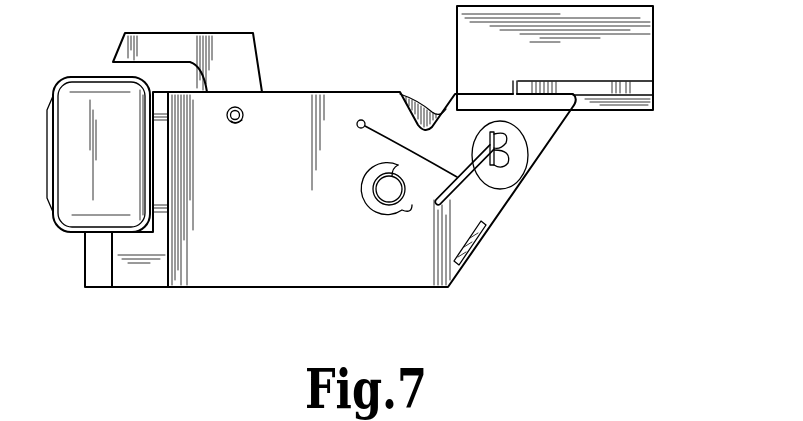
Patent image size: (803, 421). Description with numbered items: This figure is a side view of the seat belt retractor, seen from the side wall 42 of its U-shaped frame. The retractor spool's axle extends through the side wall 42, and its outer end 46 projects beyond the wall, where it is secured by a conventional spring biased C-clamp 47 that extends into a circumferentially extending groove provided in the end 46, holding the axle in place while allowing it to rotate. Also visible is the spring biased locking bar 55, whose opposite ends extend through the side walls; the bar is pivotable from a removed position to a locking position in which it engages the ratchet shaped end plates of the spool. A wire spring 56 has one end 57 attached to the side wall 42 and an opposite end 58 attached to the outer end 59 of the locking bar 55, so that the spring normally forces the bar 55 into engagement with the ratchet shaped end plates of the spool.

The side wall 42 is at (384, 288).
The outer end of axle 46 is at (404, 192).
The spring biased C-clamp 47 is at (363, 191).
The locking bar 55 is at (489, 168).
The wire spring 56 is at (388, 137).
The end of wire spring 57 is at (361, 120).
The opposite end of wire spring 58 is at (503, 158).
The outer end of bar 59 is at (488, 148).